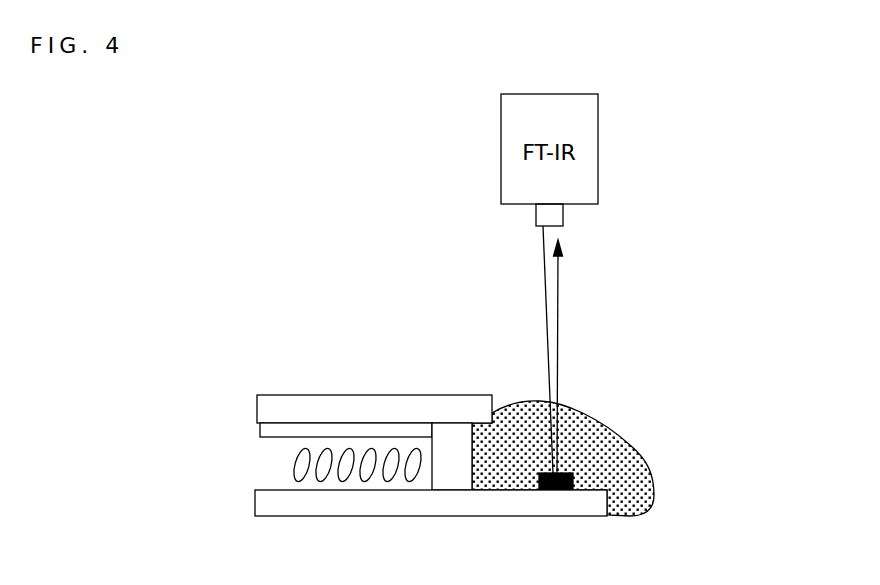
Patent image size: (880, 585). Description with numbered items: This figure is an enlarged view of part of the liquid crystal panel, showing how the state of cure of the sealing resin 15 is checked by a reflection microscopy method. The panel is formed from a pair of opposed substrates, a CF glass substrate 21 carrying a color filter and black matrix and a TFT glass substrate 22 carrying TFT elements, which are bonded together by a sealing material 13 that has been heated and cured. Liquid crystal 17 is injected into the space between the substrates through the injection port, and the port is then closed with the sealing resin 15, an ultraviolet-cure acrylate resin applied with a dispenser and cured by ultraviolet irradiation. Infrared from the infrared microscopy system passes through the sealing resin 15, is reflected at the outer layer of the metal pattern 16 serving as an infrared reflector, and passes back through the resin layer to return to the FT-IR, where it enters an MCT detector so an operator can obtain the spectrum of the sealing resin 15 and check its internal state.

The sealing material 13 is at (451, 485).
The sealing resin 15 is at (652, 483).
The metal pattern (infrared reflector) 16 is at (565, 472).
The liquid crystal 17 is at (295, 467).
The CF glass substrate 21 is at (257, 409).
The TFT glass substrate 22 is at (255, 504).